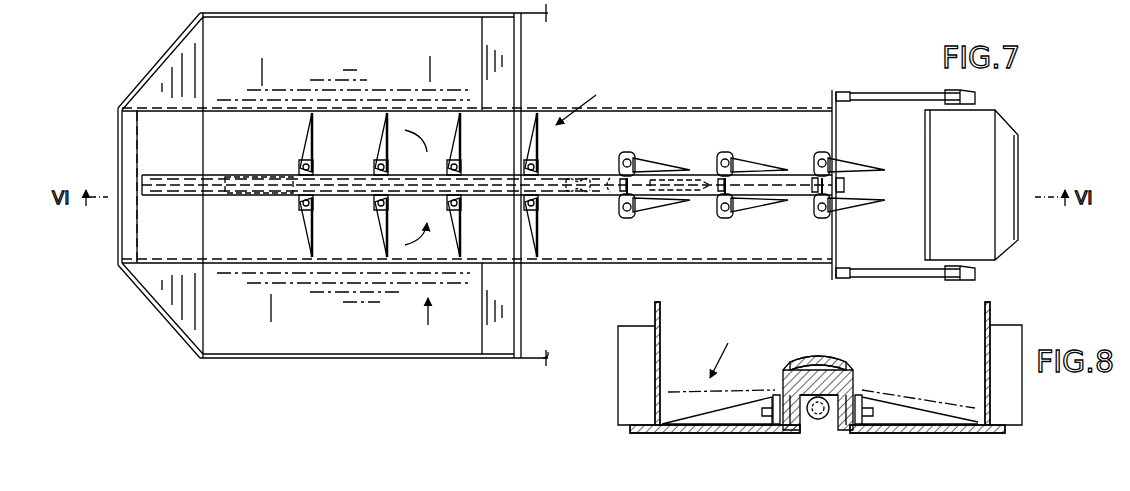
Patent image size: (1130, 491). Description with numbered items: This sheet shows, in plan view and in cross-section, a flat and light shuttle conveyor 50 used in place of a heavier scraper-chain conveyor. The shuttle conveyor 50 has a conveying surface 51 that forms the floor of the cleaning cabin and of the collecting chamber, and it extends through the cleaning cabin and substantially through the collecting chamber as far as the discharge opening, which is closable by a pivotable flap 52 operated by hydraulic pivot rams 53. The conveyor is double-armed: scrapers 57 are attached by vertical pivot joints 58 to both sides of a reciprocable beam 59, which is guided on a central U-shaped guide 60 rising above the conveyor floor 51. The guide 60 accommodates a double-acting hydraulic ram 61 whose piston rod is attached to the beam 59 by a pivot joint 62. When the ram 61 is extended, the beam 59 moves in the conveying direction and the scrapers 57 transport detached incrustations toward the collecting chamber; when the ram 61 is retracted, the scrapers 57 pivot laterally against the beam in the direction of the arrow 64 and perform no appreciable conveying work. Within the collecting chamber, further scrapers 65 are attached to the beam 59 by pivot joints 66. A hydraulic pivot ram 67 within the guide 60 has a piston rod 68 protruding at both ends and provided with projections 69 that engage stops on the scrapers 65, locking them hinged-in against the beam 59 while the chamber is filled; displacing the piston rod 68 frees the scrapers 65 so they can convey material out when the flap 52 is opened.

In FIG. 7, the shuttle conveyor 50 is at (586, 98).
In FIG. 8, the shuttle conveyor 50 is at (728, 345).
In FIG. 7, the conveying surface 51 is at (580, 262).
In FIG. 8, the conveying surface 51 is at (681, 375).
In FIG. 7, the pivotable flap 52 is at (1012, 142).
In FIG. 7, the hydraulic pivot rams 53 is at (885, 275).
In FIG. 7, the scrapers 57 is at (386, 143).
In FIG. 8, the scrapers 57 is at (920, 412).
In FIG. 7, the vertical pivot joints 58 is at (300, 208).
In FIG. 8, the vertical pivot joints 58 is at (864, 398).
In FIG. 7, the reciprocable beam 59 is at (605, 196).
In FIG. 8, the reciprocable beam 59 is at (842, 375).
In FIG. 7, the U-shaped guide 60 is at (178, 195).
In FIG. 8, the U-shaped guide 60 is at (812, 372).
In FIG. 7, the double-acting hydraulic ram 61 is at (255, 195).
In FIG. 8, the double-acting hydraulic ram 61 is at (820, 404).
In FIG. 7, the pivot joint 62 is at (576, 176).
In FIG. 7, the arrow 64 is at (426, 189).
In FIG. 7, the further scrapers 65 is at (860, 220).
In FIG. 7, the pivot joints 66 is at (820, 220).
In FIG. 7, the hydraulic pivot ram 67 is at (685, 198).
In FIG. 7, the piston rod 68 is at (790, 180).
In FIG. 7, the projections 69 is at (844, 185).